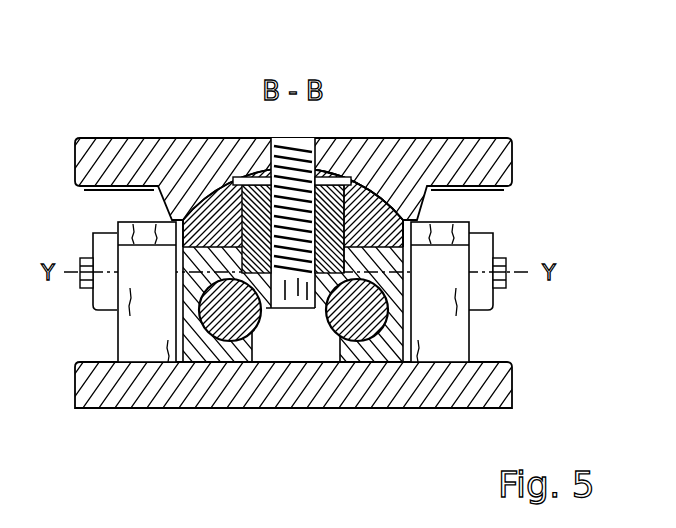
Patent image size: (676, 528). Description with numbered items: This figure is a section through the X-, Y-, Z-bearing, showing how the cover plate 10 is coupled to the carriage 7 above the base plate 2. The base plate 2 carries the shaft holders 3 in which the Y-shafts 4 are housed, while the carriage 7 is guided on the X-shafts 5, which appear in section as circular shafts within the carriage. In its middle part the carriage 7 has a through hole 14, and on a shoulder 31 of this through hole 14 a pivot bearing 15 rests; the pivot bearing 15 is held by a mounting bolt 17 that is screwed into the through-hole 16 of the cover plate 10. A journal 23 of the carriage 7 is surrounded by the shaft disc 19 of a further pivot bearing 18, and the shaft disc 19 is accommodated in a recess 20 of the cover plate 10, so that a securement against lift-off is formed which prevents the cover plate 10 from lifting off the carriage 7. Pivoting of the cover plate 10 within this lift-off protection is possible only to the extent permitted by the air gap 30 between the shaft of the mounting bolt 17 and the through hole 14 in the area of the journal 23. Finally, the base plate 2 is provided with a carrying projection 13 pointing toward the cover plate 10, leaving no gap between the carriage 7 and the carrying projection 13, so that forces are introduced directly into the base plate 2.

The base plate 2 is at (507, 388).
The shaft holder 3 is at (117, 227).
The Y-shaft 4 is at (74, 315).
The X-shaft 5 is at (216, 340).
The carriage 7 is at (415, 235).
The cover plate 10 is at (513, 155).
The carrying projection 13 is at (312, 335).
The through hole 14 is at (275, 333).
The pivot bearing 15 is at (400, 195).
The through-hole 16 is at (293, 160).
The mounting bolt 17 is at (318, 312).
The pivot bearing 18 is at (293, 210).
The shaft disc 19 is at (217, 198).
The recess 20 is at (350, 175).
The journal 23 is at (250, 180).
The air gap 30 is at (320, 185).
The shoulder 31 is at (345, 198).